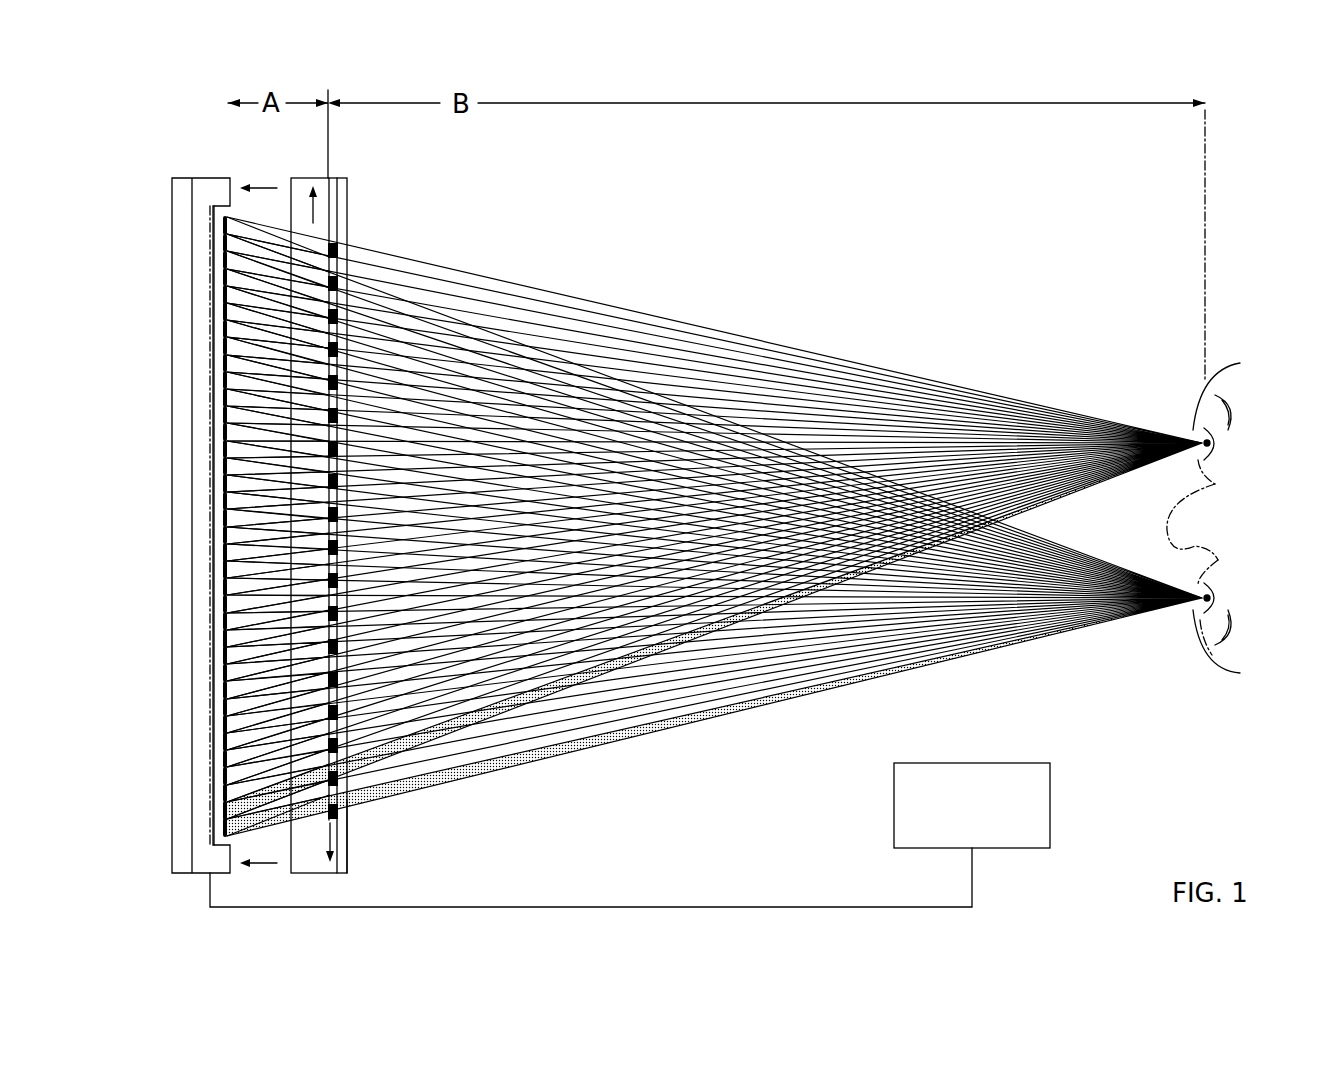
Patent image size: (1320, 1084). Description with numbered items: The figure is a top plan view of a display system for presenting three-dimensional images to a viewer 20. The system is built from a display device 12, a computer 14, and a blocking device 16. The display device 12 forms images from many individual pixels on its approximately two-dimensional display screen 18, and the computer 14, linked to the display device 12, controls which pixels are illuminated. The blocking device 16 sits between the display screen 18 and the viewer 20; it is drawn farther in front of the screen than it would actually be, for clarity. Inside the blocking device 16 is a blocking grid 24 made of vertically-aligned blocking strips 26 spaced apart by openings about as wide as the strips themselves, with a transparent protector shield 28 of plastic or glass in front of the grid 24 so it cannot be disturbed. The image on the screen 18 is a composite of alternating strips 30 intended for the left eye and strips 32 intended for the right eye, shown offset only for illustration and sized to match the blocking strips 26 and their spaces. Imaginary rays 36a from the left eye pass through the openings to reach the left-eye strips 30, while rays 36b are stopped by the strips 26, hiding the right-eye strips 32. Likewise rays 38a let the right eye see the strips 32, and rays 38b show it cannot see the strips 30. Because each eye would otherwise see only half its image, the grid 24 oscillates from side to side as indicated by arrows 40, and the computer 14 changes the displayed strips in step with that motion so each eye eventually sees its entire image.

The display device 12 is at (207, 178).
The computer 14 is at (1050, 805).
The blocking device 16 is at (313, 178).
The display screen 18 is at (216, 811).
The viewer 20 is at (1205, 655).
The blocking grid 24 is at (329, 250).
The blocking strips 26 is at (340, 300).
The transparent protector shield 28 is at (348, 860).
The left-eye image strips 30 is at (227, 262).
The right-eye image strips 32 is at (227, 310).
The rays from left eye passing through grid 36a is at (765, 705).
The rays from left eye blocked by grid 36b is at (645, 715).
The rays from right eye passing through grid 38a is at (655, 330).
The rays from right eye blocked by grid 38b is at (770, 350).
The arrows indicating grid motion 40 is at (313, 210).